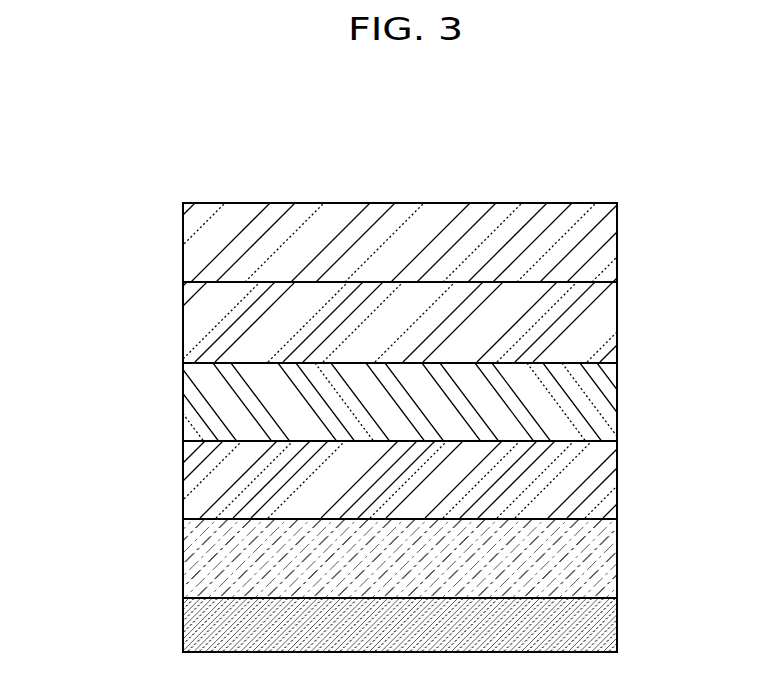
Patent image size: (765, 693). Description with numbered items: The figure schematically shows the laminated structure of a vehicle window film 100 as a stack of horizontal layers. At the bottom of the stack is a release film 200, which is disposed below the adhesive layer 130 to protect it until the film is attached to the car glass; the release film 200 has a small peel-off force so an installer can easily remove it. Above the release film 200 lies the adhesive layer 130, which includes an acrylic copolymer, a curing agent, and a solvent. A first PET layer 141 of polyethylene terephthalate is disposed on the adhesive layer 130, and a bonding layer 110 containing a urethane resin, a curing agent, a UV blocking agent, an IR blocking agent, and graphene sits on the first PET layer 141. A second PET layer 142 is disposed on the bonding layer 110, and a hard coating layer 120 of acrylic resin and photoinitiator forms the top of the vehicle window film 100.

The vehicle window film 100 is at (112, 194).
The hard coating layer 120 is at (603, 245).
The second PET layer 142 is at (603, 328).
The bonding layer 110 is at (603, 404).
The first PET layer 141 is at (603, 481).
The adhesive layer 130 is at (603, 561).
The release film 200 is at (603, 628).